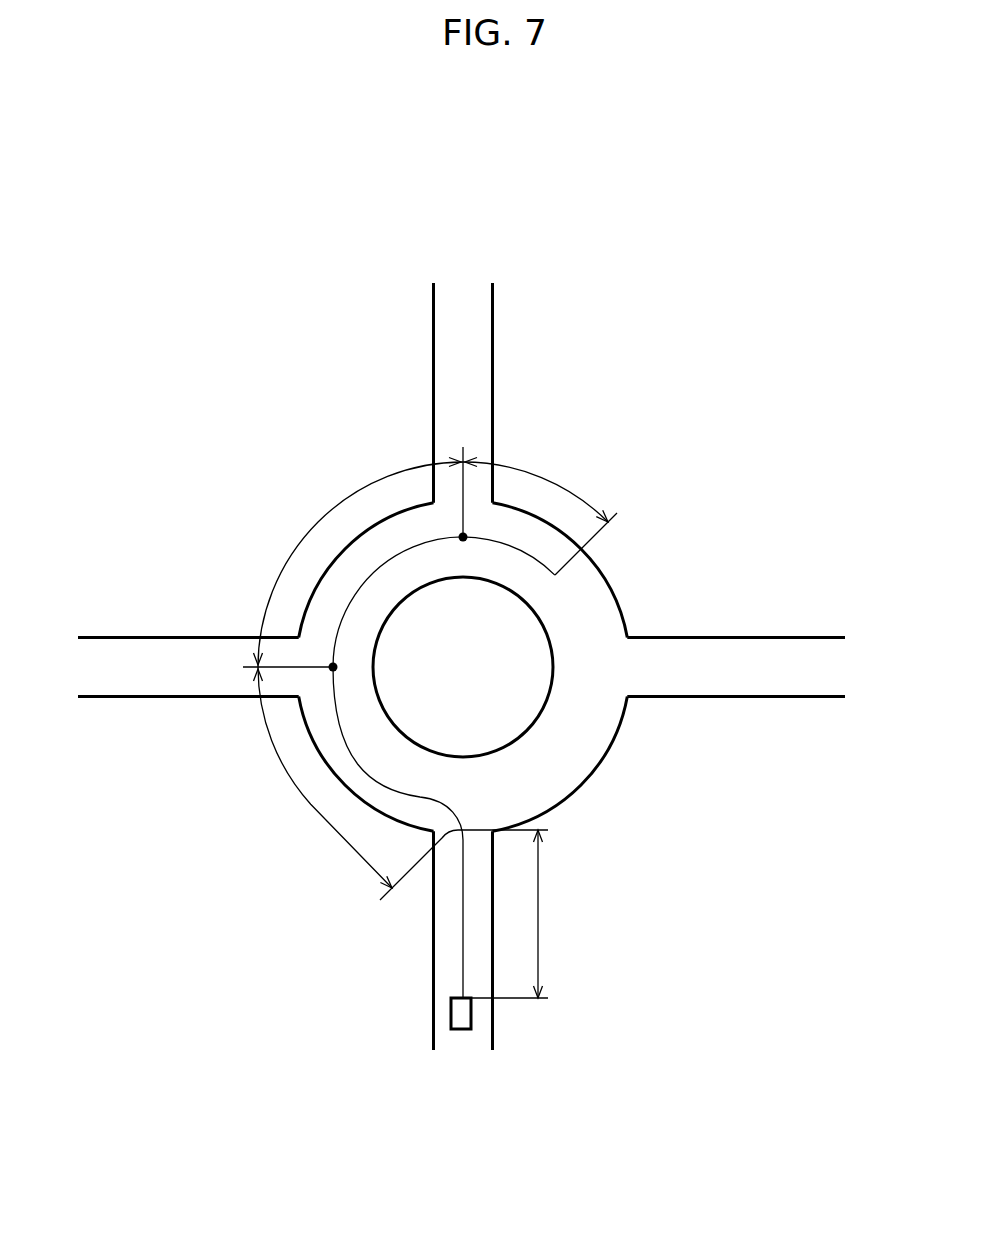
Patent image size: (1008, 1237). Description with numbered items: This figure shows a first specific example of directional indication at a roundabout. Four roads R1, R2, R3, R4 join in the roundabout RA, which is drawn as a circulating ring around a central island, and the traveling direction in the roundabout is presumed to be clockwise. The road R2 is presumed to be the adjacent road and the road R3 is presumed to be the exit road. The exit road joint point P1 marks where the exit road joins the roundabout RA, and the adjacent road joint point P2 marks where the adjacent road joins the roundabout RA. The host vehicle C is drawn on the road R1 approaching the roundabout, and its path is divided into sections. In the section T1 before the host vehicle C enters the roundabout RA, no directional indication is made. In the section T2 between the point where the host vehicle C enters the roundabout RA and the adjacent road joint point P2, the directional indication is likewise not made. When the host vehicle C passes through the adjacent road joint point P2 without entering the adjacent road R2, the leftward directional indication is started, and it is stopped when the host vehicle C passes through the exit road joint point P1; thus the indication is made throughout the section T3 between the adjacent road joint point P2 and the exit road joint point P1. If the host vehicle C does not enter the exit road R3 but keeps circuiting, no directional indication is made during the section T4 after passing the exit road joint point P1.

The roundabout RA is at (641, 552).
The road R1 is at (432, 957).
The adjacent road R2 is at (173, 698).
The exit road R3 is at (493, 355).
The road R4 is at (728, 636).
The exit road joint point P1 is at (463, 541).
The adjacent road joint point P2 is at (337, 668).
The host vehicle C is at (471, 1022).
The section T1 is at (553, 914).
The section T2 is at (385, 783).
The section T3 is at (352, 563).
The section T4 is at (544, 512).